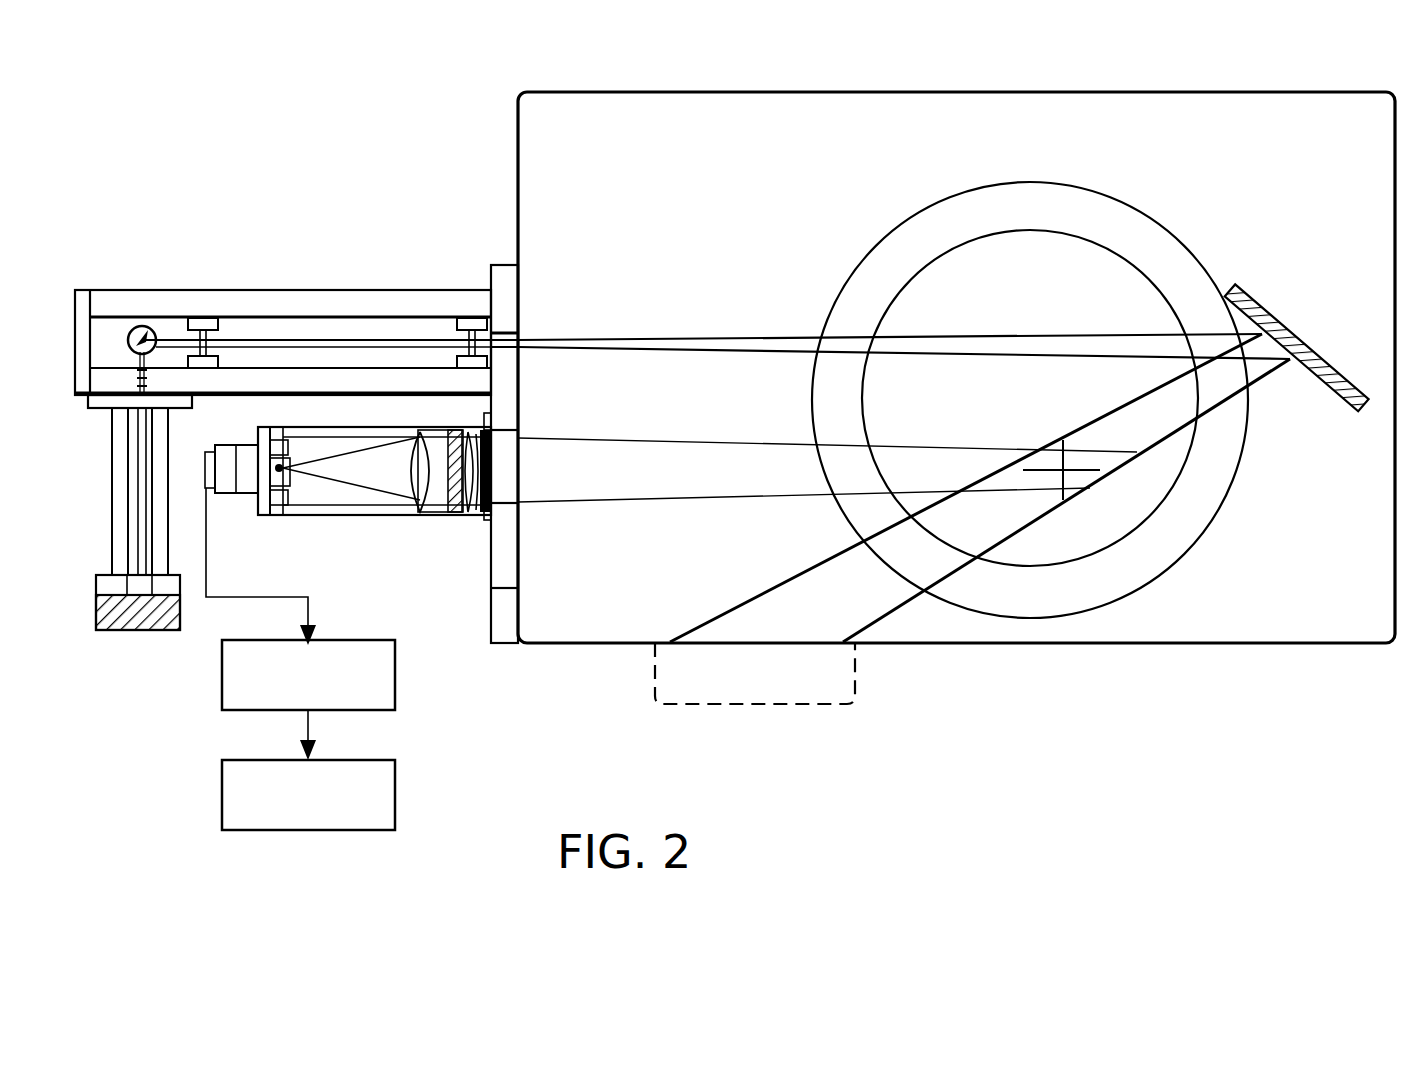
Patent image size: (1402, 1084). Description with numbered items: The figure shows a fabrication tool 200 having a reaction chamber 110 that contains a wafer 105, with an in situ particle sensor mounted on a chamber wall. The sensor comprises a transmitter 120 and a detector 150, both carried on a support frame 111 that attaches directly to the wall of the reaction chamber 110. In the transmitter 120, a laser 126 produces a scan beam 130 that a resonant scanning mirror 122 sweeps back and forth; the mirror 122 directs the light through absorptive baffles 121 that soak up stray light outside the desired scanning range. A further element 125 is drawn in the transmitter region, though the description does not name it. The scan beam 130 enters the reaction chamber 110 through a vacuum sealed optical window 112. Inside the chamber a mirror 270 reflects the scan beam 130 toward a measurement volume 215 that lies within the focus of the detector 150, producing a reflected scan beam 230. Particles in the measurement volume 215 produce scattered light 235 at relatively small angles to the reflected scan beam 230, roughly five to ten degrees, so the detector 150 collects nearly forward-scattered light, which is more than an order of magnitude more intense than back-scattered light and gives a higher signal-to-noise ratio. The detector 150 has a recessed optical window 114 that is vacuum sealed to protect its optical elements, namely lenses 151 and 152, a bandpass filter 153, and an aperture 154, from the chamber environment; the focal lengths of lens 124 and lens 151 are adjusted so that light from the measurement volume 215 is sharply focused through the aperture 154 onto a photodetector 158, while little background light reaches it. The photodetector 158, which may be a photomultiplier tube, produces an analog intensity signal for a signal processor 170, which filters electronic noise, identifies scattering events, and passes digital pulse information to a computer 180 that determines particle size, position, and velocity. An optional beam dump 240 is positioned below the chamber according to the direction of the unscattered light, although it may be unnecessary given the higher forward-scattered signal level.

The fabrication tool 200 is at (368, 105).
The reaction chamber 110 is at (685, 92).
The wafer 105 is at (1160, 212).
The mirror 270 is at (1262, 310).
The scan beam 130 is at (655, 338).
The measurement volume 215 is at (1020, 488).
The reflected scan beam 230 is at (1160, 435).
The scattered light 235 is at (615, 438).
The beam dump 240 is at (780, 704).
The support frame 111 is at (510, 265).
The optical window 112 is at (520, 338).
The recessed optical window 114 is at (520, 505).
The transmitter 120 is at (145, 290).
The baffles 121 is at (250, 338).
The scanning mirror 122 is at (130, 332).
The lens 124 is at (150, 378).
The rods 125 is at (135, 488).
The laser 126 is at (96, 608).
The detector 150 is at (295, 427).
The lens 151 is at (474, 512).
The lens 152 is at (432, 512).
The bandpass filter 153 is at (455, 430).
The aperture 154 is at (285, 472).
The photodetector 158 is at (206, 452).
The signal processor 170 is at (372, 640).
The computer 180 is at (362, 760).